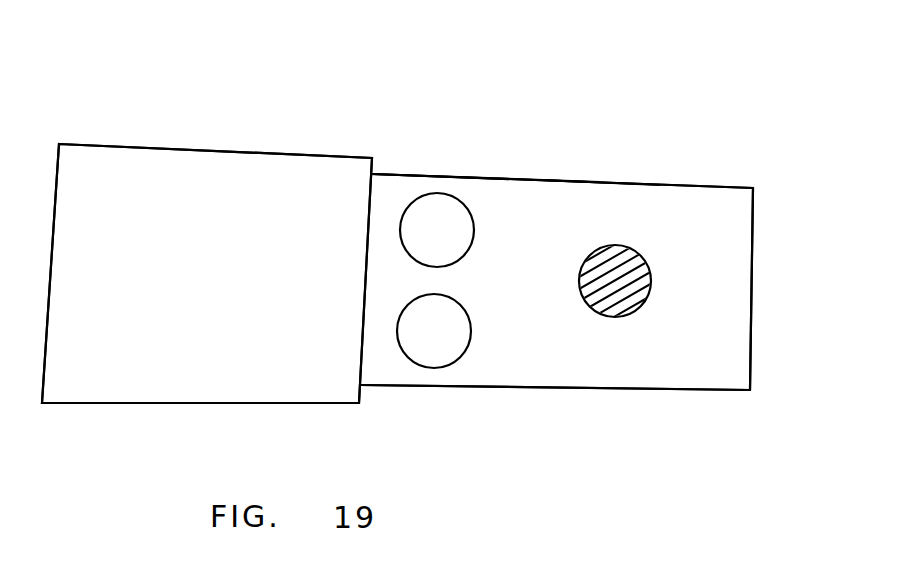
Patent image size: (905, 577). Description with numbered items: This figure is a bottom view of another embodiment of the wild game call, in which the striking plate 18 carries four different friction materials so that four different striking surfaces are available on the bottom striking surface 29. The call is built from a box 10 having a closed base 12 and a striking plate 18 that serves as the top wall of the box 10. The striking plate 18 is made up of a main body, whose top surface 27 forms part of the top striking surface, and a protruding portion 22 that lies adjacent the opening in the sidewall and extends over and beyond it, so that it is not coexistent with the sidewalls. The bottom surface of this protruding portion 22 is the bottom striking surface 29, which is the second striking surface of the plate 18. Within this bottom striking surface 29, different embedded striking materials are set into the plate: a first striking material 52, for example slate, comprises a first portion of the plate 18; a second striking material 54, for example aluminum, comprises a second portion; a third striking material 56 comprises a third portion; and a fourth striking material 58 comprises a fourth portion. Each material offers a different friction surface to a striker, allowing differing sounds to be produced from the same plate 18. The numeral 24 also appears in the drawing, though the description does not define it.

The box 10 is at (148, 162).
The closed base 12 is at (210, 292).
The striking plate 18 is at (538, 233).
The protruding portion 22 is at (576, 355).
The outer end edge 24 is at (750, 338).
The top surface of the main body 27 is at (678, 328).
The bottom striking surface 29 is at (523, 203).
The first striking material 52 is at (557, 238).
The second striking material 54 is at (617, 282).
The third striking material 56 is at (433, 212).
The fourth striking material 58 is at (432, 350).